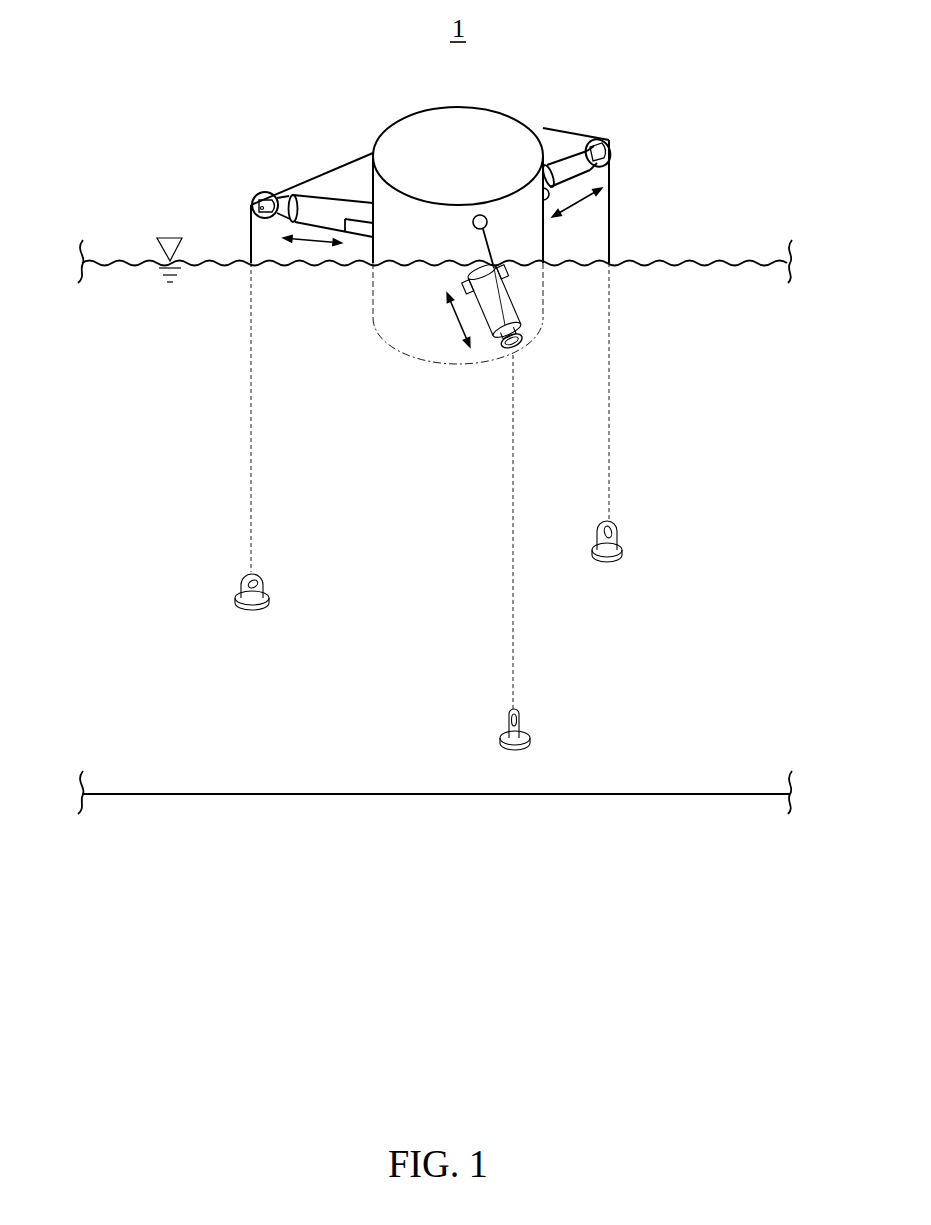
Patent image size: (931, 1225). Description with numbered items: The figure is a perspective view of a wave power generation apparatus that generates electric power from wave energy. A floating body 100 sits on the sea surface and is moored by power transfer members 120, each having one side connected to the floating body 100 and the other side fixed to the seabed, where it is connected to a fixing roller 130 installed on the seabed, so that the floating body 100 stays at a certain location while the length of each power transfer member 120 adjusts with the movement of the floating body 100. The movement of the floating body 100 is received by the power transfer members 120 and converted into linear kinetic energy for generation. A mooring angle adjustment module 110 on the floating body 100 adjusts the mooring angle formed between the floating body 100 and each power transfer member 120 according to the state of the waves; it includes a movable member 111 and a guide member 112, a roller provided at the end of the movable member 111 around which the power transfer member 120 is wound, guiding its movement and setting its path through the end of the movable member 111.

The floating body 100 is at (473, 103).
The mooring angle adjustment module 110 is at (234, 184).
The movable member 111 is at (325, 203).
The guide member 112 is at (253, 207).
The power transfer member 120 is at (568, 133).
The fixing roller 130 is at (257, 583).